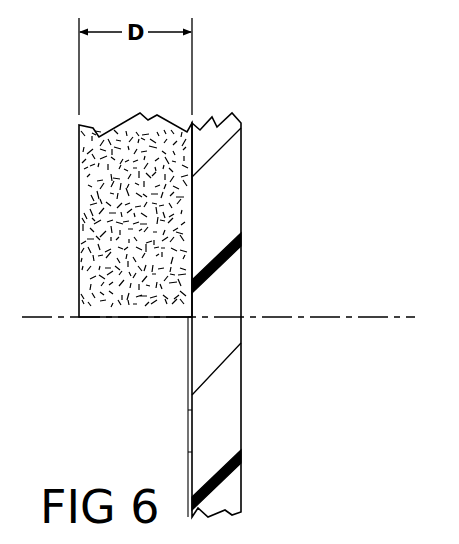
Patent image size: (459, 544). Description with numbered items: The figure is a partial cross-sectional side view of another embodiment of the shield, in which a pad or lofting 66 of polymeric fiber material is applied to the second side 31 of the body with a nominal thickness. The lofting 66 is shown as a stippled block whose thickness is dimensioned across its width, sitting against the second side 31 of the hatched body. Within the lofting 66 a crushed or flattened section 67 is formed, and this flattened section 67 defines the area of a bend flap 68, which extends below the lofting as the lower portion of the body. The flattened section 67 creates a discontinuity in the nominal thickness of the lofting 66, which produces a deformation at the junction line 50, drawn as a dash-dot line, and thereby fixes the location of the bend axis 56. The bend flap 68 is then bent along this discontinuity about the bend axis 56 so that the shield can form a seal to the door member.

The junction line 50 is at (357, 317).
The lofting 66 is at (105, 210).
The bend flap 68 is at (227, 427).
The bend axis 56 is at (183, 318).
The flattened section 67 is at (188, 418).
The second side 31 is at (185, 453).